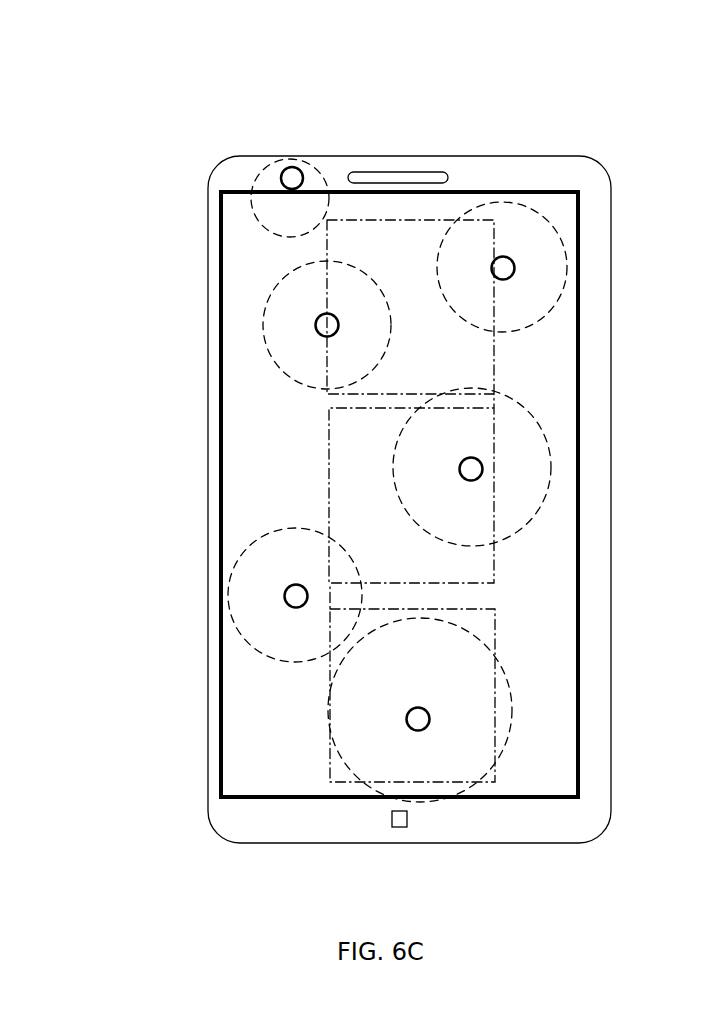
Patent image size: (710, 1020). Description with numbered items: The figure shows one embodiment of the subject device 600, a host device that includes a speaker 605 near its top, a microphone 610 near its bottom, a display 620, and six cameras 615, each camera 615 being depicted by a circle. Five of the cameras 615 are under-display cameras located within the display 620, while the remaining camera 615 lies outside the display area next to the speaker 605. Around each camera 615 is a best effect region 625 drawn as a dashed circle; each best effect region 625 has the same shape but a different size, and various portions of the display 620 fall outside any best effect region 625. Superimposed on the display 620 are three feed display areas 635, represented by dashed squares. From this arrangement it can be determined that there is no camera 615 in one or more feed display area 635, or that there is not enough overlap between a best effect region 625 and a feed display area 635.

The subject device 600 is at (340, 157).
The speaker 605 is at (397, 170).
The microphone 610 is at (397, 829).
The camera 615 is at (482, 464).
The display 620 is at (578, 724).
The best effect region 625 is at (415, 609).
The feed display area 635 is at (412, 394).